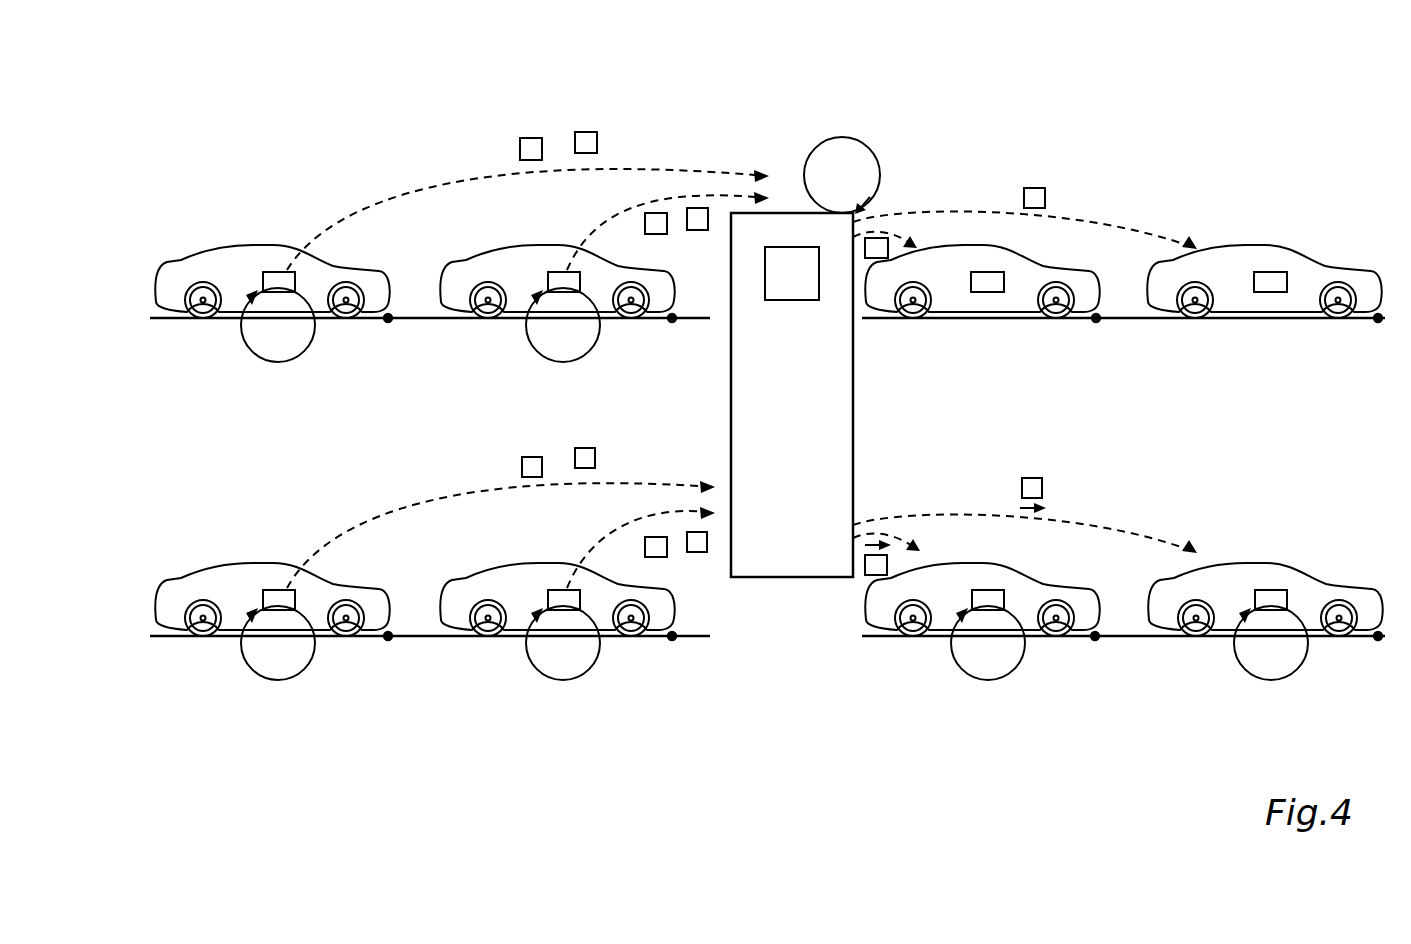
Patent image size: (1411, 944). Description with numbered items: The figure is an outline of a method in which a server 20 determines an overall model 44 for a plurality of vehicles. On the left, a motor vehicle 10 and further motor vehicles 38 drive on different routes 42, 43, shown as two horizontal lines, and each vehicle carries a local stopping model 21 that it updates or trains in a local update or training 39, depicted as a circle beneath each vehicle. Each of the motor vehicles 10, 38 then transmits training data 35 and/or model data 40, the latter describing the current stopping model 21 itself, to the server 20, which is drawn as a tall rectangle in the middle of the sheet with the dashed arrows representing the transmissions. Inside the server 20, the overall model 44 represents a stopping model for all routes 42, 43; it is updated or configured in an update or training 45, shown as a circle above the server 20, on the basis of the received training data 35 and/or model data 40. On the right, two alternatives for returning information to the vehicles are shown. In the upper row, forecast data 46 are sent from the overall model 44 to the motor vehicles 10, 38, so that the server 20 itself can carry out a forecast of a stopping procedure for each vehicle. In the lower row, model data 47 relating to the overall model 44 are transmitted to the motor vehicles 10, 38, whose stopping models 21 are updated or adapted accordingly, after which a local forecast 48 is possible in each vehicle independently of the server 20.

The motor vehicle 10 is at (203, 247).
The server 20 is at (777, 578).
The local stopping model 21 is at (268, 272).
The training data 35 is at (531, 138).
The further motor vehicles 38 is at (462, 262).
The update or training 39 is at (278, 362).
The model data 40 is at (586, 132).
The route 42 is at (697, 316).
The route 43 is at (697, 634).
The overall model 44 is at (800, 301).
The update or training 45 is at (838, 137).
The forecast data 46 is at (882, 238).
The model data 47 is at (1032, 478).
The local forecast 48 is at (993, 682).